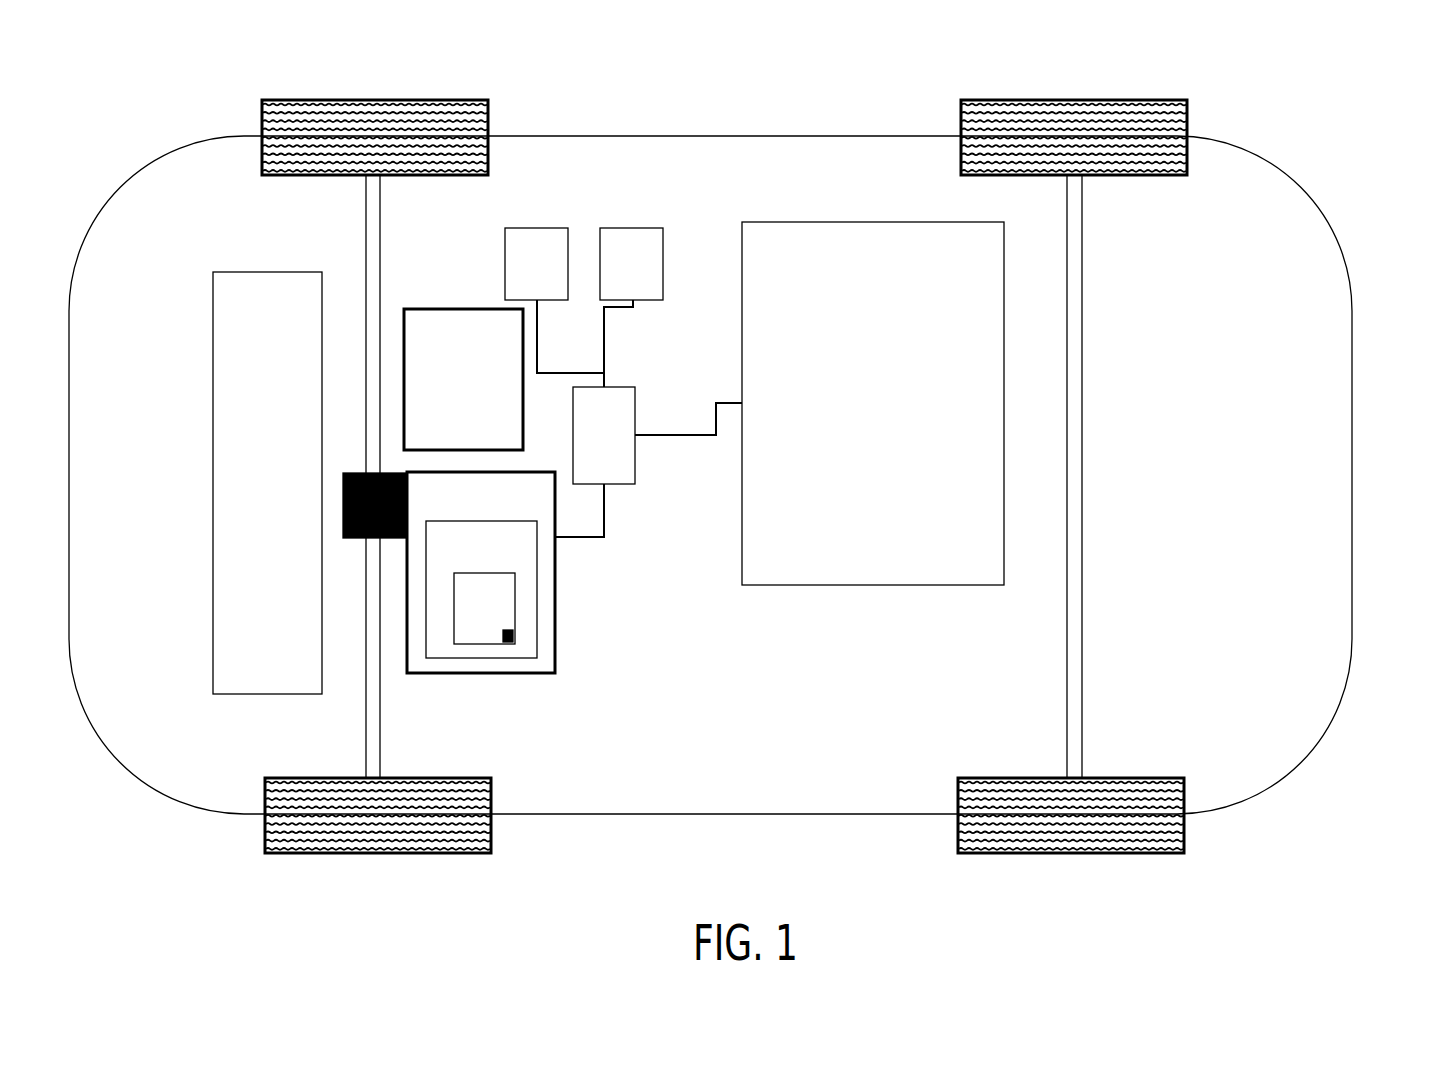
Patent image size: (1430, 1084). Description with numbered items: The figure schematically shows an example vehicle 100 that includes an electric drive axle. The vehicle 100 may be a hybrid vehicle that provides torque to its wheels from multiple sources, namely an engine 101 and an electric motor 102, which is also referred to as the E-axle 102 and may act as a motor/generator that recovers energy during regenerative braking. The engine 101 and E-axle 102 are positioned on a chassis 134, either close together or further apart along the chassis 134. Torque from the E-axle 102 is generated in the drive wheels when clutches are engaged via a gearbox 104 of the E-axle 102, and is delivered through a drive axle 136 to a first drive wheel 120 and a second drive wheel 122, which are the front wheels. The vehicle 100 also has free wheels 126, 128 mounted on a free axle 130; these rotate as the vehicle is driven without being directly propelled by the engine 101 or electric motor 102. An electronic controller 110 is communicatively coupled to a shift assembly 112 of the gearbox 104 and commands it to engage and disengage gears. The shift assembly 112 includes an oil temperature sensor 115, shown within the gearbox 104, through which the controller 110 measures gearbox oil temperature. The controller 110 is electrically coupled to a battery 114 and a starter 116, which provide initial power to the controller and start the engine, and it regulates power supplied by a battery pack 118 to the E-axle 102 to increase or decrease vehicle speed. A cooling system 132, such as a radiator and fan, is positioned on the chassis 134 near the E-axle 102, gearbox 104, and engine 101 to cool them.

The vehicle 100 is at (1346, 68).
The engine 101 is at (463, 379).
The electric motor 102 is at (464, 509).
The gearbox 104 is at (464, 557).
The electronic controller 110 is at (587, 448).
The shift assembly 112 is at (467, 619).
The battery 114 is at (615, 277).
The oil temperature sensor 115 is at (513, 642).
The starter 116 is at (520, 277).
The battery pack 118 is at (859, 416).
The first drive wheel 120 is at (491, 778).
The second drive wheel 122 is at (488, 172).
The free wheel 126 is at (1188, 170).
The free wheel 128 is at (1167, 778).
The free axle 130 is at (1086, 415).
The cooling system 132 is at (250, 482).
The chassis 134 is at (694, 202).
The drive axle 136 is at (381, 722).